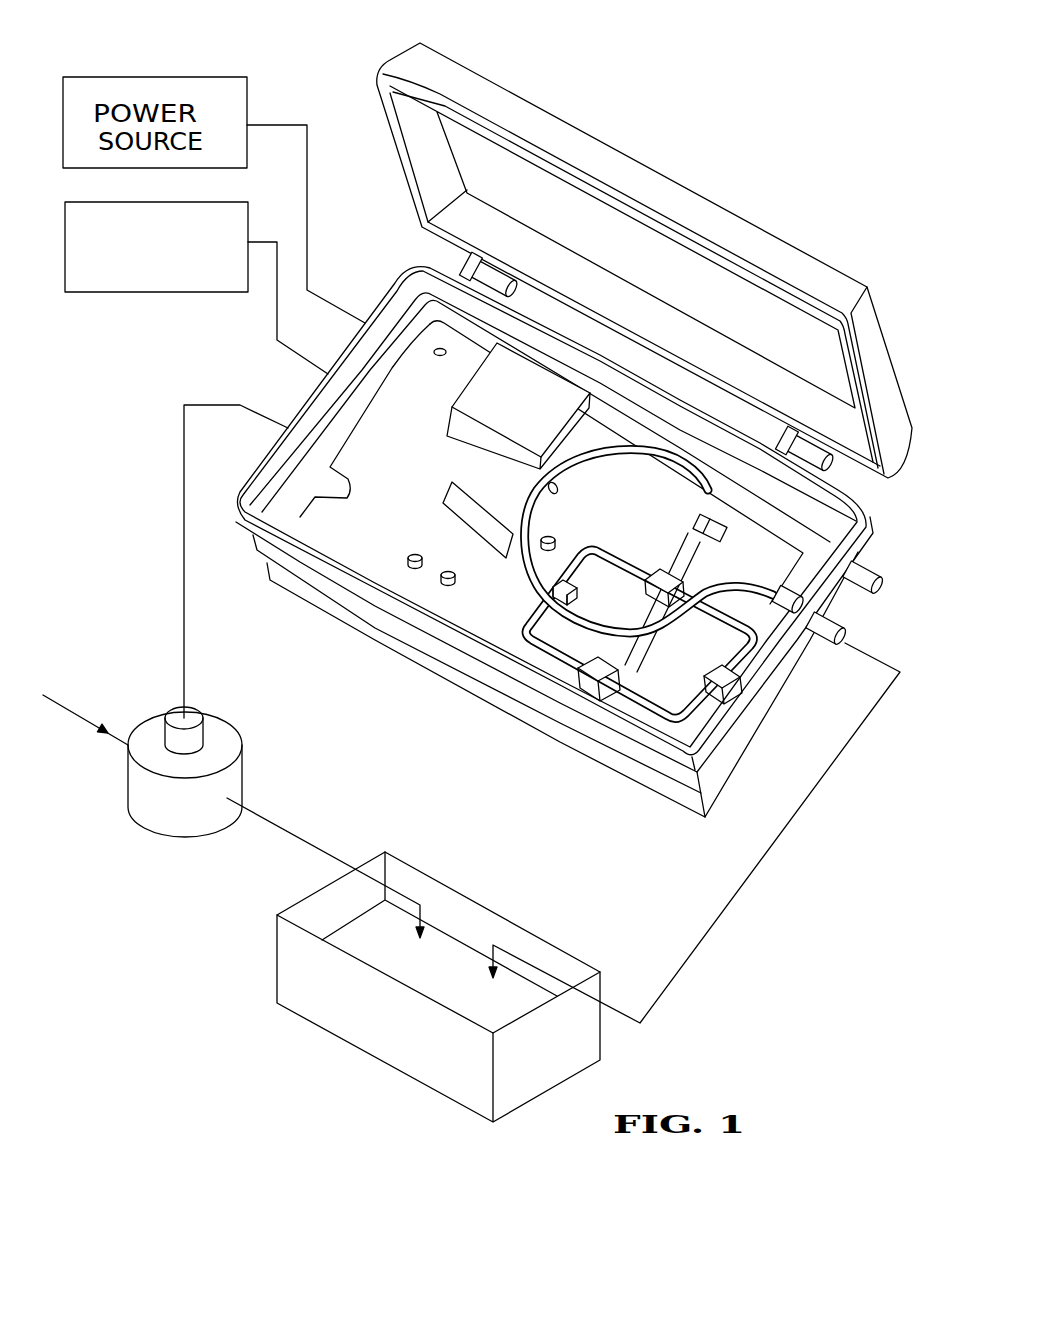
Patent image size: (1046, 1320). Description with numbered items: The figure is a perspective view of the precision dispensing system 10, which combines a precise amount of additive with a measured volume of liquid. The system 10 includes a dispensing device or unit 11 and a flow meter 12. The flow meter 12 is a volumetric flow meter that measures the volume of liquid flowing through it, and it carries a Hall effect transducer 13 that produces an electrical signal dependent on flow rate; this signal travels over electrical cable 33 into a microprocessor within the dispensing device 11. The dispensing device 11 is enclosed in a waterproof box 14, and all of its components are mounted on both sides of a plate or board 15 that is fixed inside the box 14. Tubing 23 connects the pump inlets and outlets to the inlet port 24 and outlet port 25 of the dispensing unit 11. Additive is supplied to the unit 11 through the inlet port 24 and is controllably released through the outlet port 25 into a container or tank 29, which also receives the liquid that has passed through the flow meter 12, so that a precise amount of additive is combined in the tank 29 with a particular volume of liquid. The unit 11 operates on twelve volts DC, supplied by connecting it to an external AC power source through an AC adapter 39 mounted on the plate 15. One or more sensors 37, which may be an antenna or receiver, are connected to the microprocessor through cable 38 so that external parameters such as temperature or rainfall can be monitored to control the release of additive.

The precision dispensing system 10 is at (803, 220).
The dispensing device 11 is at (579, 542).
The flow meter 12 is at (152, 800).
The Hall effect transducer 13 is at (193, 715).
The waterproof box 14 is at (448, 638).
The plate 15 is at (358, 545).
The tubing 23 is at (548, 660).
The inlet port 24 is at (908, 605).
The outlet port 25 is at (835, 638).
The tank 29 is at (297, 962).
The electrical cable 33 is at (183, 527).
The sensor 37 is at (123, 293).
The cable 38 is at (277, 307).
The AC adapter 39 is at (534, 406).